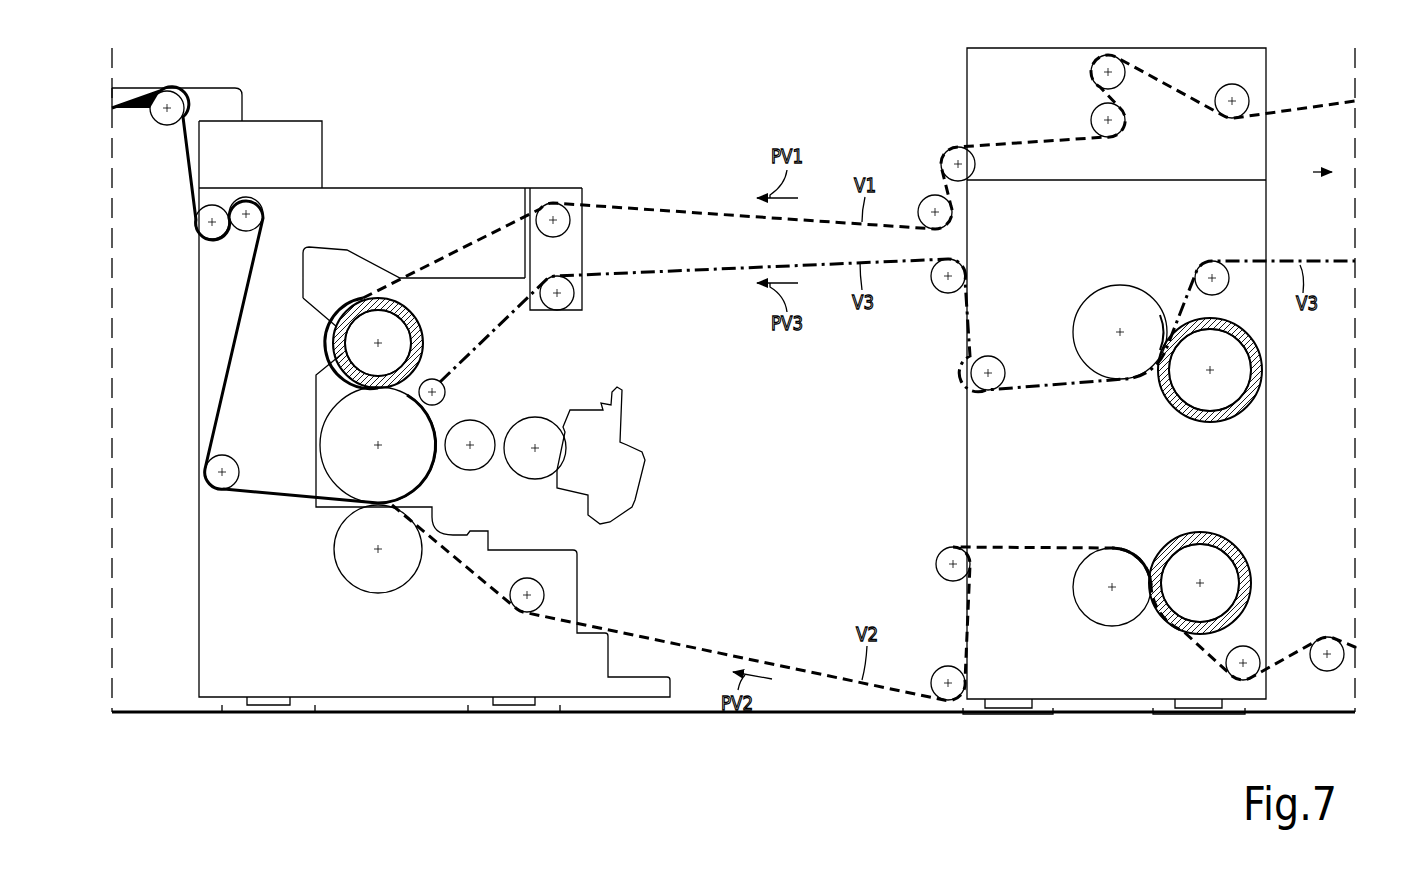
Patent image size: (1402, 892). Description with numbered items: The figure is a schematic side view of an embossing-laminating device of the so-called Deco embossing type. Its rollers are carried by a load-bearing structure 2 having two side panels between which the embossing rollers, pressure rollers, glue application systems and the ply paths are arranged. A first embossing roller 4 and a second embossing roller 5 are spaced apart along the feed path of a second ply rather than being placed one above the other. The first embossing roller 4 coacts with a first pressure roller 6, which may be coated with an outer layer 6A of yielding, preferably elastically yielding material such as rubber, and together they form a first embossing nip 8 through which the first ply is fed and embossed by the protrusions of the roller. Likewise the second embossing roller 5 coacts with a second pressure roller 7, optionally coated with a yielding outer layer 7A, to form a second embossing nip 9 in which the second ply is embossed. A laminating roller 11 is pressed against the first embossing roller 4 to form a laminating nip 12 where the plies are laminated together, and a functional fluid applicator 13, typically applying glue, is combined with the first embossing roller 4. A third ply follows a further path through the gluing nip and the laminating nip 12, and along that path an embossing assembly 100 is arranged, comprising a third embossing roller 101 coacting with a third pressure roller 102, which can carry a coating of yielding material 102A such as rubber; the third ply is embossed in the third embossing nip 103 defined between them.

The load-bearing structure 2 is at (497, 208).
The first embossing roller 4 is at (342, 415).
The second embossing roller 5 is at (1113, 620).
The first pressure roller 6 is at (409, 351).
The outer layer 6A is at (415, 318).
The second pressure roller 7 is at (1246, 603).
The outer layer 7A is at (1252, 566).
The first embossing nip 8 is at (340, 383).
The second embossing nip 9 is at (1146, 536).
The laminating roller 11 is at (348, 570).
The laminating nip 12 is at (318, 513).
The functional fluid applicator 13 is at (560, 385).
The embossing assembly 100 is at (1058, 365).
The third embossing roller 101 is at (1100, 291).
The third pressure roller 102 is at (1243, 402).
The yielding material coating 102A is at (1262, 361).
The third embossing nip 103 is at (1174, 296).